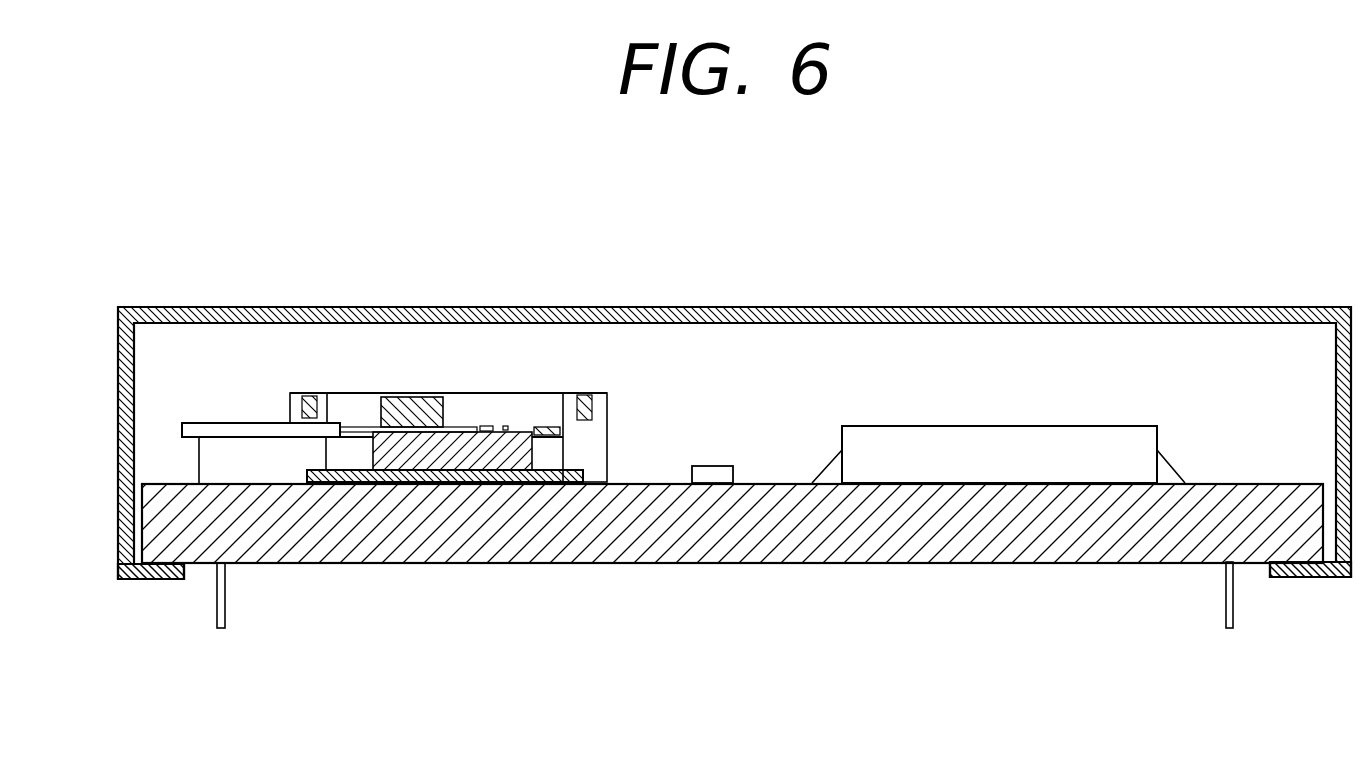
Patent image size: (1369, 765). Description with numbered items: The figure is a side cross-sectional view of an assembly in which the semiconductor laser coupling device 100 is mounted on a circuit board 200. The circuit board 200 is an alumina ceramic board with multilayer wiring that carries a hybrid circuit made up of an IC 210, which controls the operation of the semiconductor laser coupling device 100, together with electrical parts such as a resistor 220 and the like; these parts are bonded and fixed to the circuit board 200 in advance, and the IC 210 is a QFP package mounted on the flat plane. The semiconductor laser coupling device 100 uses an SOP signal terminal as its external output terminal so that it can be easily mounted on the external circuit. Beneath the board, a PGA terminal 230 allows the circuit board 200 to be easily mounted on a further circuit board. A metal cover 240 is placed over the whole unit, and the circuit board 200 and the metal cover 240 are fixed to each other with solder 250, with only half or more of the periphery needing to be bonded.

The semiconductor laser coupling device 100 is at (362, 392).
The circuit board 200 is at (500, 564).
The IC 210 is at (983, 426).
The resistor 220 is at (717, 466).
The PGA terminal 230 is at (225, 598).
The metal cover 240 is at (1043, 307).
The solder 250 is at (168, 580).